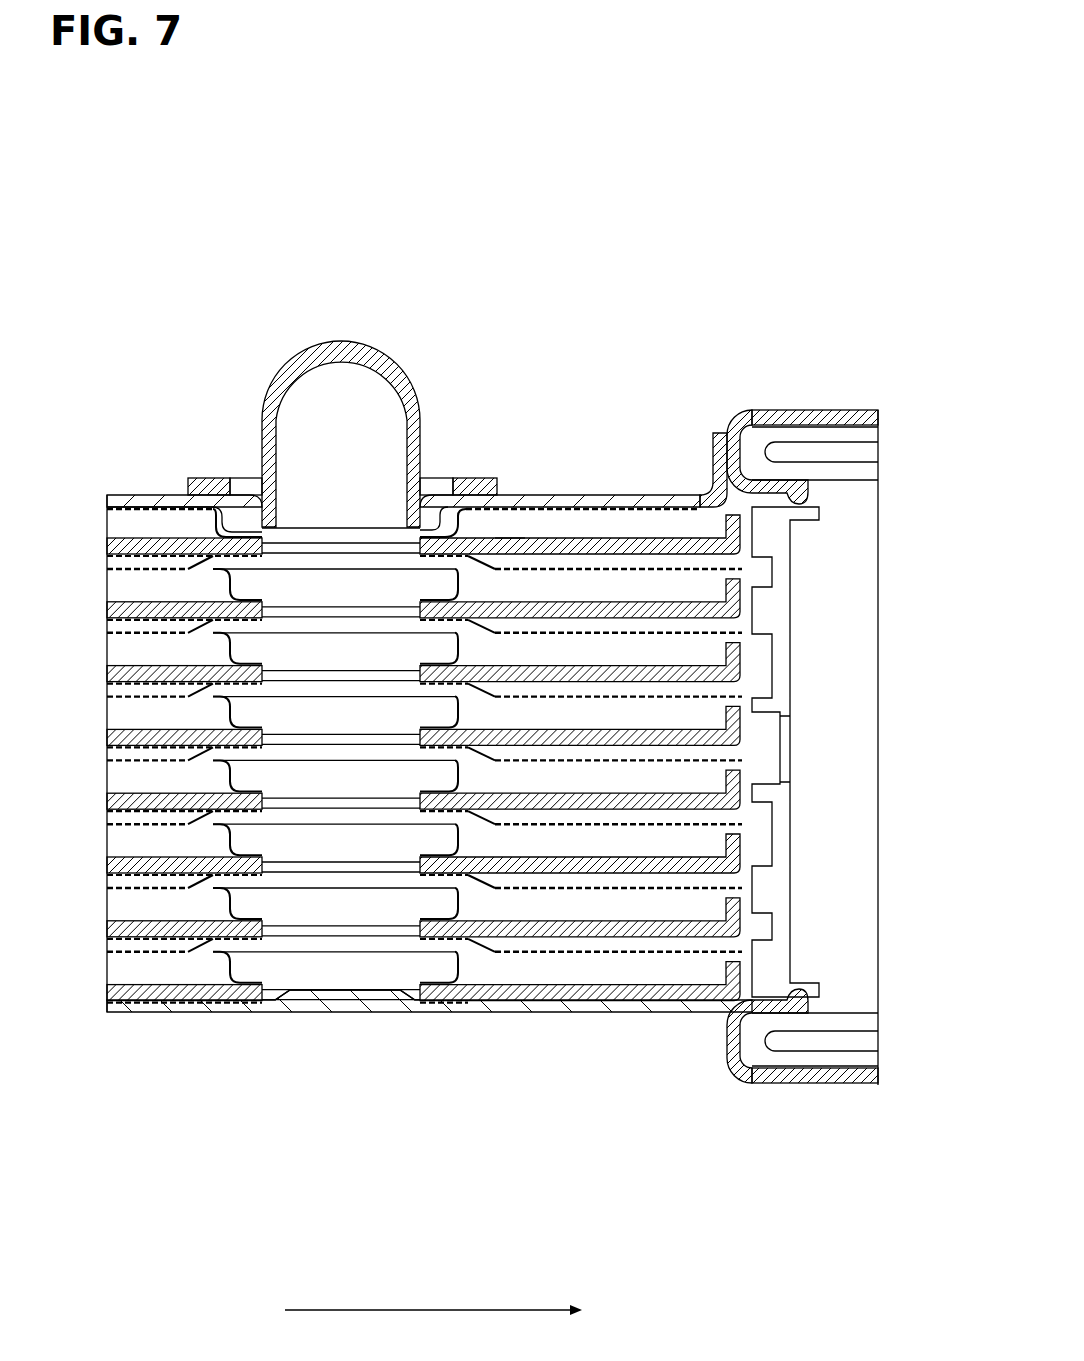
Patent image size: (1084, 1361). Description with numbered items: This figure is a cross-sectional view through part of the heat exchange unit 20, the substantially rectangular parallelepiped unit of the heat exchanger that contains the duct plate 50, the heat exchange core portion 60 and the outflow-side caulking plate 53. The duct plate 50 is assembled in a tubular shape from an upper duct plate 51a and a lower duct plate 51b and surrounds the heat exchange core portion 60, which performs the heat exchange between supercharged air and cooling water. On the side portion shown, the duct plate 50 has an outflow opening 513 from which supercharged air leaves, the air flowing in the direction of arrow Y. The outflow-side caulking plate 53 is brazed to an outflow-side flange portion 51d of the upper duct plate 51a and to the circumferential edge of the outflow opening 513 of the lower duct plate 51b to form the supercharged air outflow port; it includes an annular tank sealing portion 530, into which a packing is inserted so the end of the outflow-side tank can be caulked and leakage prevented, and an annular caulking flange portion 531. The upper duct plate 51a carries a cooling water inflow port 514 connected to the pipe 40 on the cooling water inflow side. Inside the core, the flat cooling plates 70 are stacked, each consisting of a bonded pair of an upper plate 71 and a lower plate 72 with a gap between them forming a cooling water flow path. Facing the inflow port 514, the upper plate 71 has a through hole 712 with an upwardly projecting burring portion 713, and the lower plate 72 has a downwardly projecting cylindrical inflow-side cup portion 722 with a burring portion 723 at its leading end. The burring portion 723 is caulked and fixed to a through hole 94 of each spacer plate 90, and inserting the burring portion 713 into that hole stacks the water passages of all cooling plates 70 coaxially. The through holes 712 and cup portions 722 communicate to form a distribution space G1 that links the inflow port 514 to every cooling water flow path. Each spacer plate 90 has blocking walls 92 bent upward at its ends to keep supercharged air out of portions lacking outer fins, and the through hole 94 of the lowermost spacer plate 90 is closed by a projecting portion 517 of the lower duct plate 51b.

The heat exchange unit 20 is at (891, 281).
The pipe 40 is at (337, 342).
The duct plate 50 is at (171, 486).
The upper duct plate 51a is at (148, 493).
The lower duct plate 51b is at (138, 1013).
The outflow-side flange portion 51d is at (718, 432).
The outflow opening 513 is at (750, 992).
The cooling water inflow port 514 is at (262, 518).
The projecting portion 517 is at (345, 1003).
The outflow-side caulking plate 53 is at (823, 400).
The tank sealing portion 530 is at (748, 410).
The caulking flange portion 531 is at (878, 418).
The heat exchange core portion 60 is at (561, 490).
The cooling plate 70 is at (652, 397).
The upper plate 71 is at (633, 566).
The through hole 712 is at (508, 538).
The burring portion 713 is at (415, 545).
The lower plate 72 is at (580, 566).
The inflow-side cup portion 722 is at (505, 572).
The burring portion 723 is at (415, 603).
The spacer plate 90 is at (683, 530).
The blocking wall 92 is at (745, 520).
The through hole 94 is at (398, 625).
The distribution space G1 is at (315, 712).